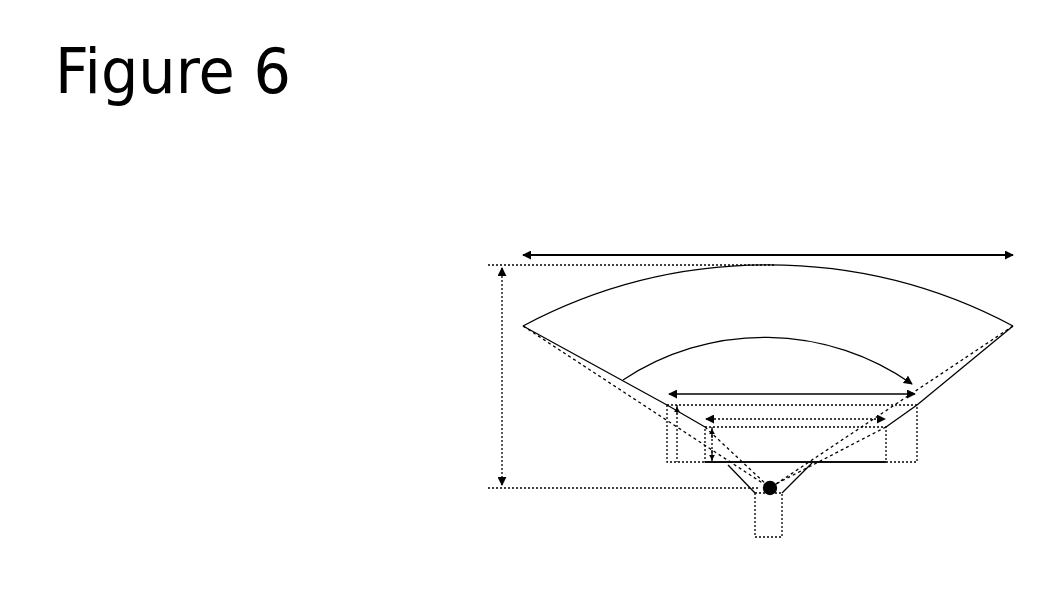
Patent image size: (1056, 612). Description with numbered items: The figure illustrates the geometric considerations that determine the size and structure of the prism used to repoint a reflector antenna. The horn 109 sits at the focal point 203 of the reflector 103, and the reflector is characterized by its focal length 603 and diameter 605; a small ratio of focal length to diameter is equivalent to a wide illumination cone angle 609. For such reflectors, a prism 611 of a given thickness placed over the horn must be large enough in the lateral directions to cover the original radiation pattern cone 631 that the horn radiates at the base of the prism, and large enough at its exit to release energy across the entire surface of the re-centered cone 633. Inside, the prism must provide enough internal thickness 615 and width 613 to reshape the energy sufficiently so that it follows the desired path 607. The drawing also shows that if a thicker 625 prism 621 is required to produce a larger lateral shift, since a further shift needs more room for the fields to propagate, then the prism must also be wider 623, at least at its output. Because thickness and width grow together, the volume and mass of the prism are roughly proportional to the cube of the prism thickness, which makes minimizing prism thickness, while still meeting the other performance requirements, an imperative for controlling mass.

The reflector 103 is at (768, 335).
The horn 109 is at (770, 532).
The focal point 203 is at (761, 492).
The focal length 603 is at (602, 376).
The diameter 605 is at (768, 240).
The desired path 607 is at (845, 449).
The illumination cone angle 609 is at (767, 346).
The prism 611 is at (887, 448).
The width 613 is at (805, 411).
The internal thickness 615 is at (708, 444).
The thicker prism 621 is at (918, 435).
The wider (prism width) 623 is at (792, 382).
The thicker (prism thickness) 625 is at (676, 431).
The original radiation pattern cone 631 is at (646, 407).
The re-centered cone 633 is at (870, 414).